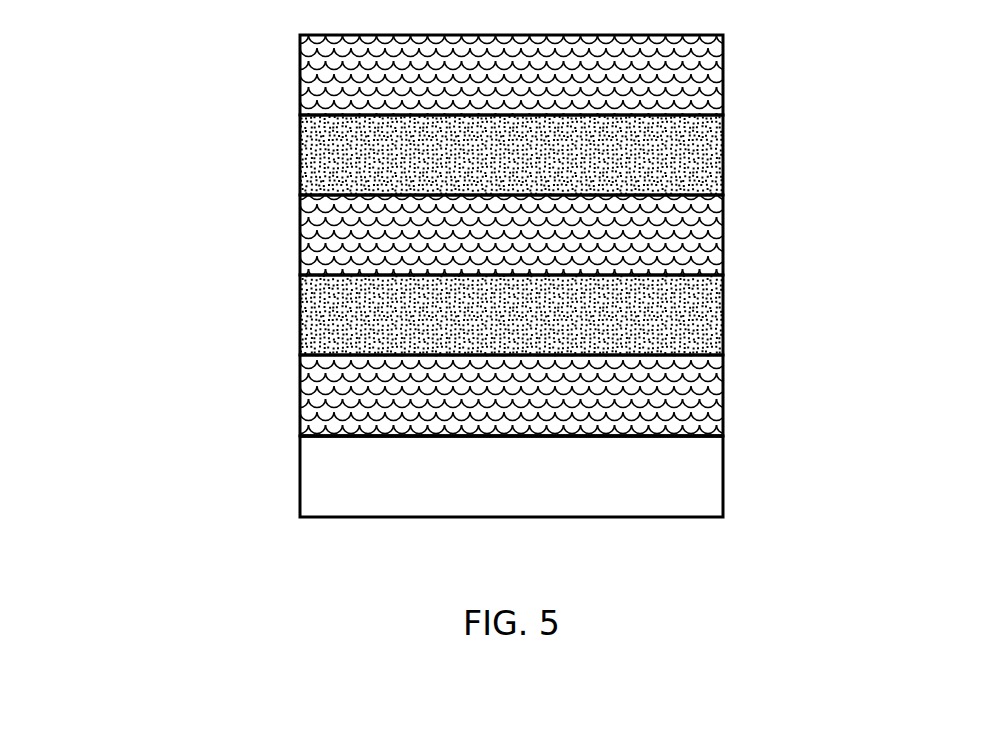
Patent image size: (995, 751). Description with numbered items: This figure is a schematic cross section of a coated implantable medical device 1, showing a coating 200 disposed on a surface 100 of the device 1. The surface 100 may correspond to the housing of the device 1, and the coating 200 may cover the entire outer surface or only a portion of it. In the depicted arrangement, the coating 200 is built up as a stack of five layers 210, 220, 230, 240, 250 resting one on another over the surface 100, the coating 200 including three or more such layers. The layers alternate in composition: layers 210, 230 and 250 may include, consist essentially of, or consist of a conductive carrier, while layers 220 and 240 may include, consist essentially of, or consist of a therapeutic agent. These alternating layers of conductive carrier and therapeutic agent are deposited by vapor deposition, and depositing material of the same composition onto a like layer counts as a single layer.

The implantable medical device 1 is at (300, 485).
The surface 100 is at (316, 432).
The coating 200 is at (454, 276).
The layer 210 is at (724, 388).
The layer 220 is at (724, 323).
The layer 230 is at (724, 228).
The layer 240 is at (724, 163).
The layer 250 is at (724, 83).